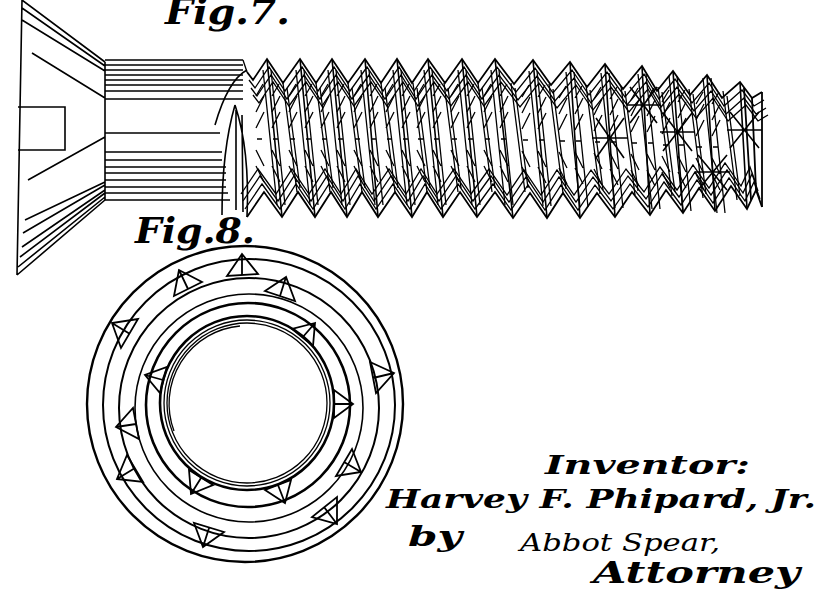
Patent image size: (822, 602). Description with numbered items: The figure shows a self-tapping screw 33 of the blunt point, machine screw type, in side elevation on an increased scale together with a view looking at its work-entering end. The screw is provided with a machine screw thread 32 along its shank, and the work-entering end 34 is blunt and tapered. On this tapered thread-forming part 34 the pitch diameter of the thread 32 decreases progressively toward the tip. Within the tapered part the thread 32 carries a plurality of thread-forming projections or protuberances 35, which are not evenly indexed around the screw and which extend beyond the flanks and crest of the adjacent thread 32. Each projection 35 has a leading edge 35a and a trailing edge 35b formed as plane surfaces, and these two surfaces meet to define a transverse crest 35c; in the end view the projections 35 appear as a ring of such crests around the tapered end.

In FIG. 7, the machine screw thread 32 is at (552, 219).
In FIG. 8, the machine screw thread 32 is at (403, 430).
In FIG. 7, the self-tapping screw 33 is at (462, 231).
In FIG. 8, the self-tapping screw 33 is at (81, 446).
In FIG. 7, the work-entering end 34 is at (731, 91).
In FIG. 8, the work-entering end 34 is at (316, 385).
In FIG. 7, the thread-forming projections 35 is at (760, 133).
In FIG. 8, the thread-forming projections 35 is at (148, 379).
In FIG. 8, the leading edge 35a is at (323, 272).
In FIG. 8, the trailing edge 35b is at (350, 283).
In FIG. 8, the transverse crest 35c is at (352, 280).